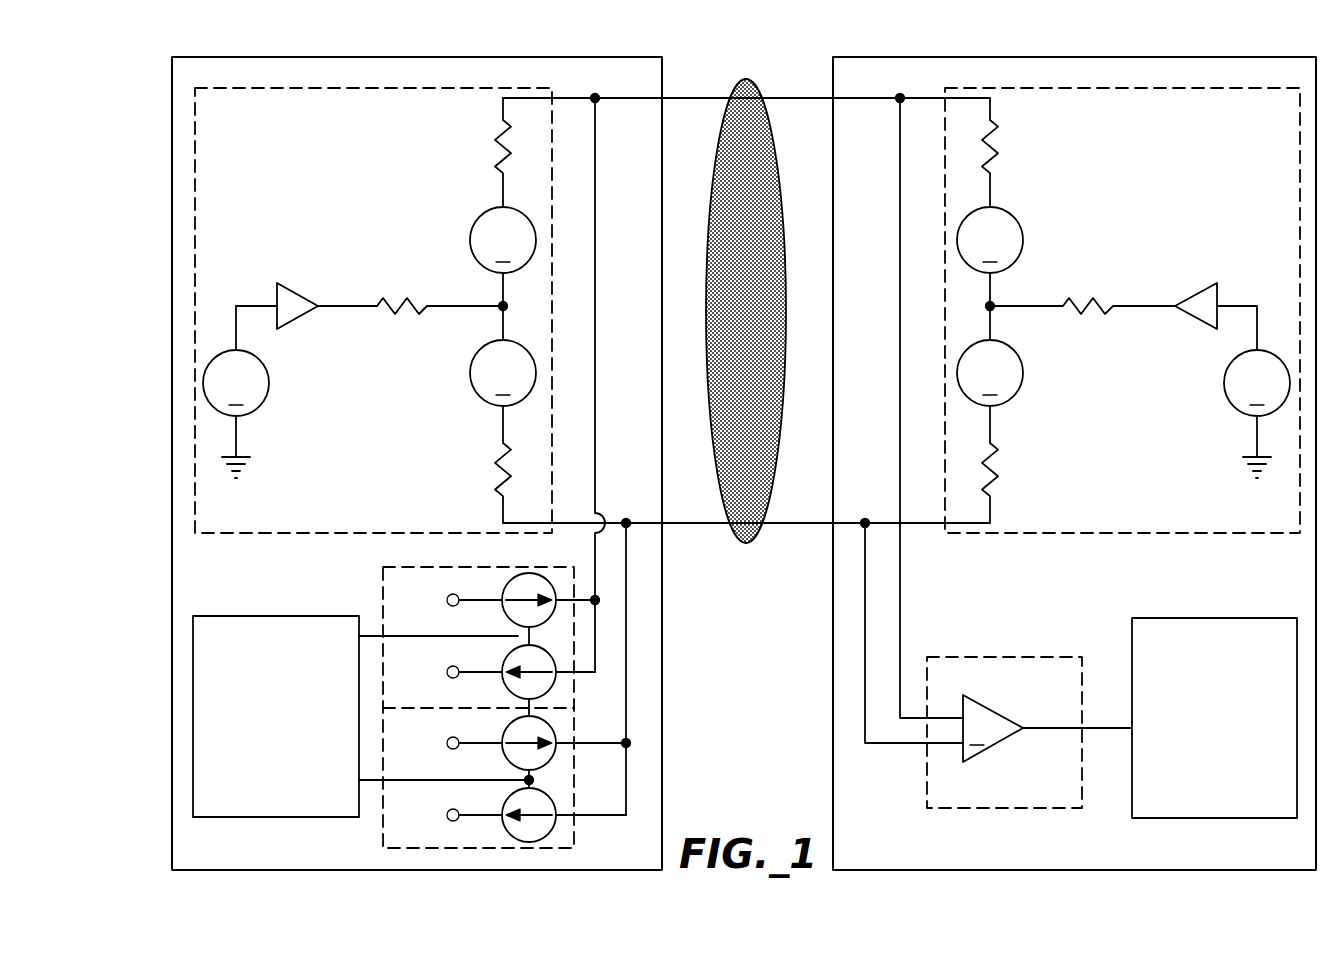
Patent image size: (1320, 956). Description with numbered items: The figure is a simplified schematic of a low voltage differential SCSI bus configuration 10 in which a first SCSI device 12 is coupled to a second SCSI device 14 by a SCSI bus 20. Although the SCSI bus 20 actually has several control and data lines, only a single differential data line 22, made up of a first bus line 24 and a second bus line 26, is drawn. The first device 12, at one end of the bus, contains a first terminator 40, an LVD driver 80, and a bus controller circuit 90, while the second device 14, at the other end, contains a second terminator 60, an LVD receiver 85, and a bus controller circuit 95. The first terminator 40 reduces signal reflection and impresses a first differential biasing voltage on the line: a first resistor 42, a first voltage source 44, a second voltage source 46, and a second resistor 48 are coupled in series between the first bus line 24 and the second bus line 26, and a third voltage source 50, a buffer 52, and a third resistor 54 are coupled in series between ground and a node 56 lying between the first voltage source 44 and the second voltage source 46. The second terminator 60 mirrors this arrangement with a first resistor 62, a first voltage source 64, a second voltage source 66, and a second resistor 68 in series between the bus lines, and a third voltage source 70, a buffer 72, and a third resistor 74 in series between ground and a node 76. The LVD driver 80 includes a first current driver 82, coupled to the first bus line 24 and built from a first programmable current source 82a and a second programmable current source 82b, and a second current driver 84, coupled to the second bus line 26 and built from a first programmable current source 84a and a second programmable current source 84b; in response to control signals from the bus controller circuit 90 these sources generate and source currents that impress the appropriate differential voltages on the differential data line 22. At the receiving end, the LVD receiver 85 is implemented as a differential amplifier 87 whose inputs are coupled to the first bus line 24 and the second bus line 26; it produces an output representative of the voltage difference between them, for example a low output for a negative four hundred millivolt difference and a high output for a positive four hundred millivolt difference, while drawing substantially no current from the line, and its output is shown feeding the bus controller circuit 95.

The LVD SCSI bus configuration 10 is at (845, 50).
The first SCSI device 12 is at (575, 57).
The second SCSI device 14 is at (1238, 57).
The SCSI bus 20 is at (745, 622).
The differential data line 22 is at (750, 540).
The first bus line 24 is at (688, 98).
The second bus line 26 is at (683, 523).
The first terminator 40 is at (248, 533).
The first resistor 42 is at (497, 150).
The first voltage source 44 is at (480, 215).
The second voltage source 46 is at (480, 398).
The second resistor 48 is at (492, 465).
The third voltage source 50 is at (267, 403).
The buffer 52 is at (292, 287).
The third resistor 54 is at (392, 302).
The node 56 is at (505, 305).
The second terminator 60 is at (1090, 533).
The first resistor 62 is at (997, 150).
The first voltage source 64 is at (1013, 215).
The second voltage source 66 is at (1012, 402).
The second resistor 68 is at (997, 480).
The third voltage source 70 is at (1230, 403).
The buffer 72 is at (1203, 287).
The third resistor 74 is at (1100, 302).
The node 76 is at (985, 305).
The LVD driver 80 is at (574, 820).
The first current driver 82 is at (388, 602).
The first programmable current source 82a is at (508, 578).
The second programmable current source 82b is at (508, 650).
The second current driver 84 is at (388, 822).
The first programmable current source 84a is at (508, 721).
The second programmable current source 84b is at (508, 793).
The LVD receiver 85 is at (977, 657).
The differential amplifier 87 is at (987, 703).
The bus controller circuit 90 is at (228, 616).
The bus controller circuit 95 is at (1163, 618).